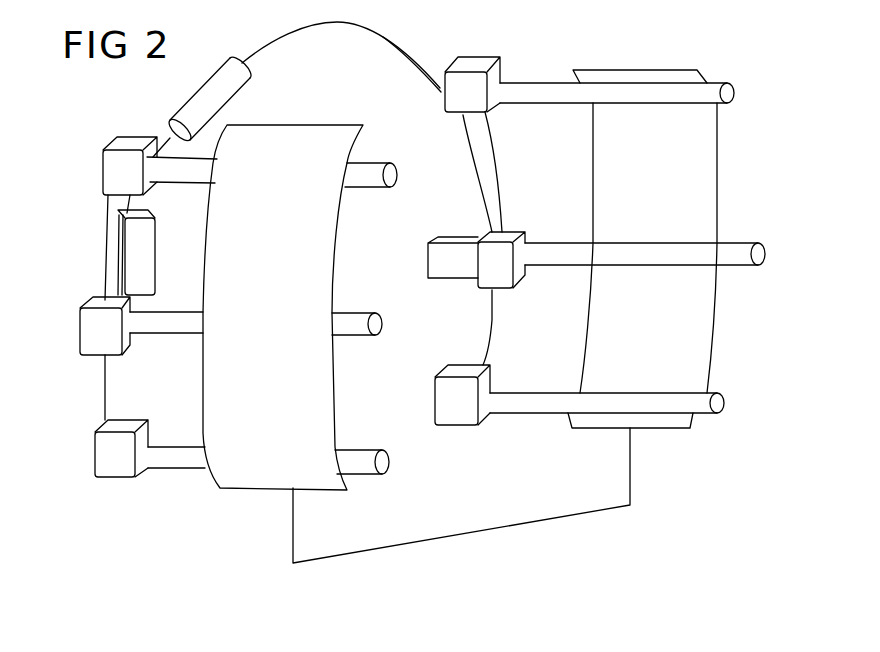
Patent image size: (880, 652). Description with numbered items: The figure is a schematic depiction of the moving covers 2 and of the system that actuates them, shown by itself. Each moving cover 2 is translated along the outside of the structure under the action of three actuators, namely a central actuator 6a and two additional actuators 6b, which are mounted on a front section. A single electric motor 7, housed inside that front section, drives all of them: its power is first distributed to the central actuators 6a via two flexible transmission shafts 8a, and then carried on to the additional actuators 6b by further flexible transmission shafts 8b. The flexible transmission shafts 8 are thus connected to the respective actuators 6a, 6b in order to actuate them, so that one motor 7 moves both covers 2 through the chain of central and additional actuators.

The moving cover 2 is at (223, 363).
The central actuator 6a is at (102, 322).
The additional actuator 6b is at (103, 160).
The electric motor 7 is at (193, 100).
The flexible transmission shaft 8 is at (135, 248).
The flexible transmission shaft 8a is at (293, 28).
The flexible transmission shaft 8b is at (108, 208).